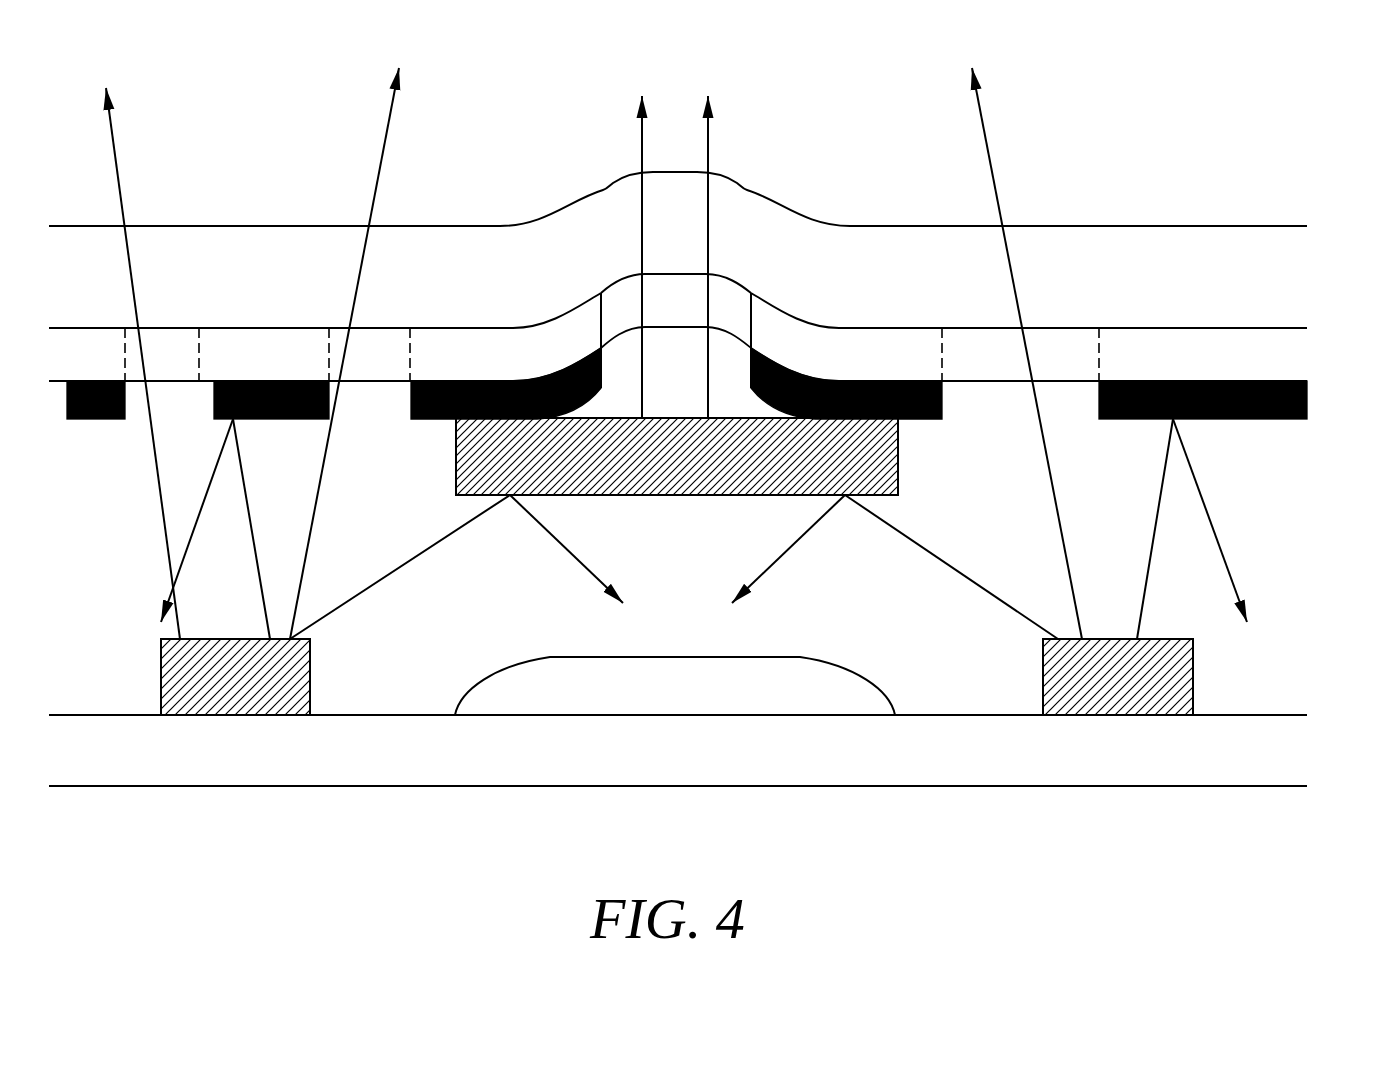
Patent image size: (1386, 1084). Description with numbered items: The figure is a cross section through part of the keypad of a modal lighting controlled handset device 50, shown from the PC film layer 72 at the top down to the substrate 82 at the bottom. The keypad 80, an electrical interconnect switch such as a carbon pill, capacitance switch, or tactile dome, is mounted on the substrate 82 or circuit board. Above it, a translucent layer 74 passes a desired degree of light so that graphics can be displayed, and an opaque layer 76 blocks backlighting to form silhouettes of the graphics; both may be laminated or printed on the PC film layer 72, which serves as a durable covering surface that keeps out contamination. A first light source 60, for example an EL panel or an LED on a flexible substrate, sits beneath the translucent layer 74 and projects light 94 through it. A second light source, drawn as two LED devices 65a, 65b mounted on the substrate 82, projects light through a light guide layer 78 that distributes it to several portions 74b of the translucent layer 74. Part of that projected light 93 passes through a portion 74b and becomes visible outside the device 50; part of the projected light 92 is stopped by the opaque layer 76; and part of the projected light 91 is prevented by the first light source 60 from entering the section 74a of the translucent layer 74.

The handset device 50 is at (703, 427).
The first light source 60 is at (651, 482).
The second light source 65a is at (168, 677).
The second light source 65b is at (1182, 682).
The PC film layer 72 is at (1286, 282).
The translucent layer 74 is at (1286, 356).
The section of the translucent layer 74a is at (724, 305).
The portions of the translucent layer 74b is at (1063, 342).
The opaque layer 76 is at (788, 375).
The light guide layer 78 is at (98, 497).
The keypad 80 is at (668, 668).
The substrate 82 is at (1281, 752).
The projected light 91 is at (940, 560).
The projected light 92 is at (1218, 532).
The projected light 93 is at (992, 165).
The light 94 is at (641, 140).